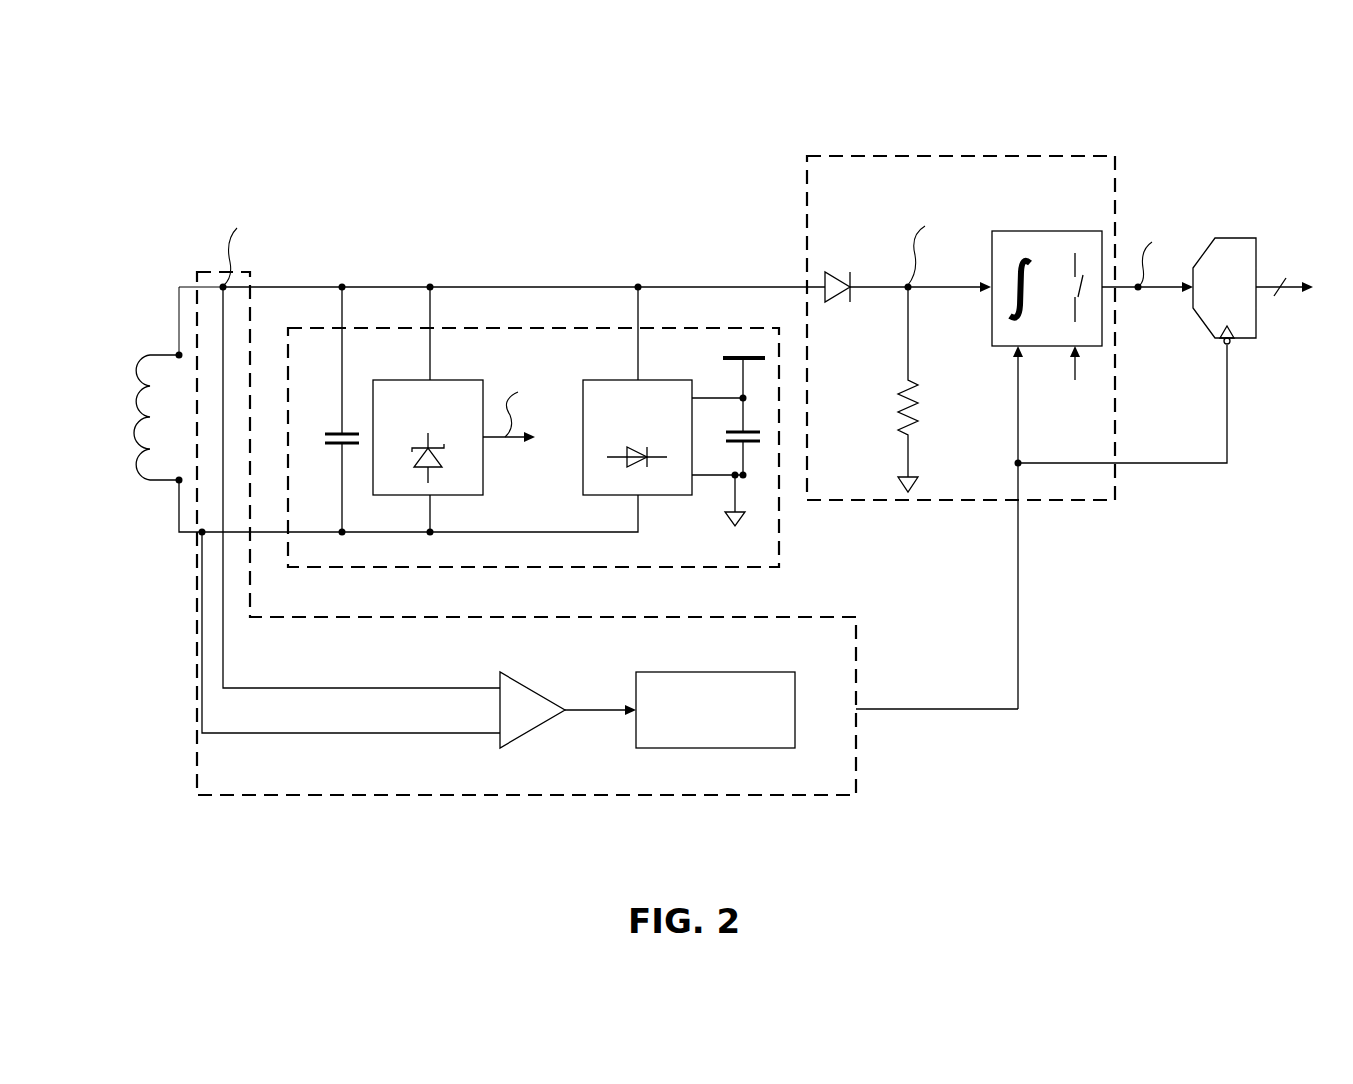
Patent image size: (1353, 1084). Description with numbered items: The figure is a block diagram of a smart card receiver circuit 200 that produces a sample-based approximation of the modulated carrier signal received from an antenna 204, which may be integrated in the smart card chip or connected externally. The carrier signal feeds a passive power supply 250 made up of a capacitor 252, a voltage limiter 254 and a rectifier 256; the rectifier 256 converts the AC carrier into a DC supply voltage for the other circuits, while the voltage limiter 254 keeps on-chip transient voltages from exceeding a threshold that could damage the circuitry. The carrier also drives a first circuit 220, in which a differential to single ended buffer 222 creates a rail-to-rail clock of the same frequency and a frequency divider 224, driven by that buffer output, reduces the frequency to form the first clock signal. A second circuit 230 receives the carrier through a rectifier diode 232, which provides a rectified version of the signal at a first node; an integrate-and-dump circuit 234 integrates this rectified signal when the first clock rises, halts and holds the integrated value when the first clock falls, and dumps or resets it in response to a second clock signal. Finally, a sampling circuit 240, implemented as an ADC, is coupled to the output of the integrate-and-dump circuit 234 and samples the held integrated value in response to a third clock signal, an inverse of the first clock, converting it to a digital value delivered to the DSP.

The smart card receiver circuit 200 is at (283, 136).
The antenna 204 is at (140, 354).
The first circuit 220 is at (822, 616).
The differential to single ended buffer 222 is at (545, 692).
The frequency divider 224 is at (636, 732).
The second circuit 230 is at (807, 156).
The rectifier diode 232 is at (830, 272).
The integrate-and-dump circuit 234 is at (1050, 231).
The sampling circuit 240 is at (1245, 238).
The passive power supply 250 is at (500, 328).
The capacitor 252 is at (340, 432).
The voltage limiter 254 is at (445, 380).
The rectifier 256 is at (650, 380).